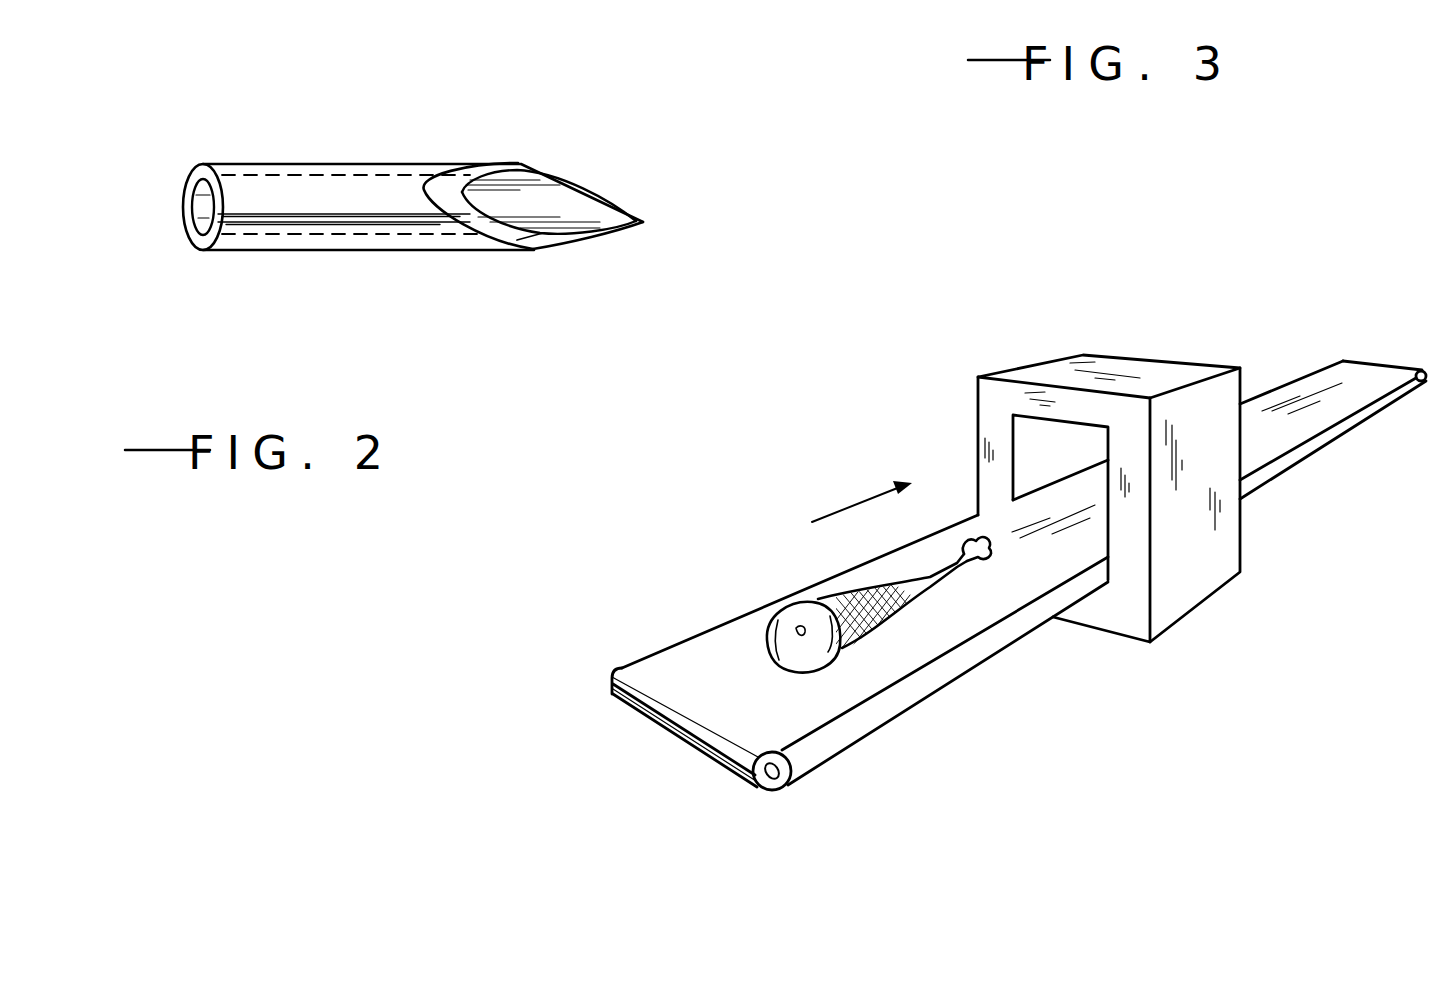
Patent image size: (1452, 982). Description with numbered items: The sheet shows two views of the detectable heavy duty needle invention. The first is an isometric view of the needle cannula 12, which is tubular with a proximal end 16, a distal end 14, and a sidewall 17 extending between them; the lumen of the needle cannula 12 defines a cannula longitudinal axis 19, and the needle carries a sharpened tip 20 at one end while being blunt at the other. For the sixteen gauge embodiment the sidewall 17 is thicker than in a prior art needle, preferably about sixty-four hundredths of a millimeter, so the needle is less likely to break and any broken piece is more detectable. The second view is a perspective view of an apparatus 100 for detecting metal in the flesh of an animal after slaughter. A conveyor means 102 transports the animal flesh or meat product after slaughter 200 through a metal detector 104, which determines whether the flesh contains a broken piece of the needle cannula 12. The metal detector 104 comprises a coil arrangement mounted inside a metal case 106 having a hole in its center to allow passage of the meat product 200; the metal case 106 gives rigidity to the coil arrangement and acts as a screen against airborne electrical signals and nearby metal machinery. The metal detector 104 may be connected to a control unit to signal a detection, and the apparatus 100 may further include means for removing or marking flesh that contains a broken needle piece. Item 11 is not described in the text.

In FIG. 2, the needle 11 is at (397, 217).
In FIG. 2, the needle cannula 12 is at (410, 157).
In FIG. 2, the distal end 14 is at (196, 163).
In FIG. 2, the proximal end 16 is at (585, 177).
In FIG. 2, the sidewall 17 is at (206, 243).
In FIG. 2, the cannula longitudinal axis 19 is at (194, 207).
In FIG. 2, the sharpened tip 20 is at (655, 213).
In FIG. 3, the apparatus 100 is at (1141, 312).
In FIG. 3, the conveyor means 102 is at (733, 638).
In FIG. 3, the metal detector 104 is at (1221, 600).
In FIG. 3, the metal case 106 is at (1160, 597).
In FIG. 3, the animal flesh or meat product after slaughter 200 is at (897, 617).